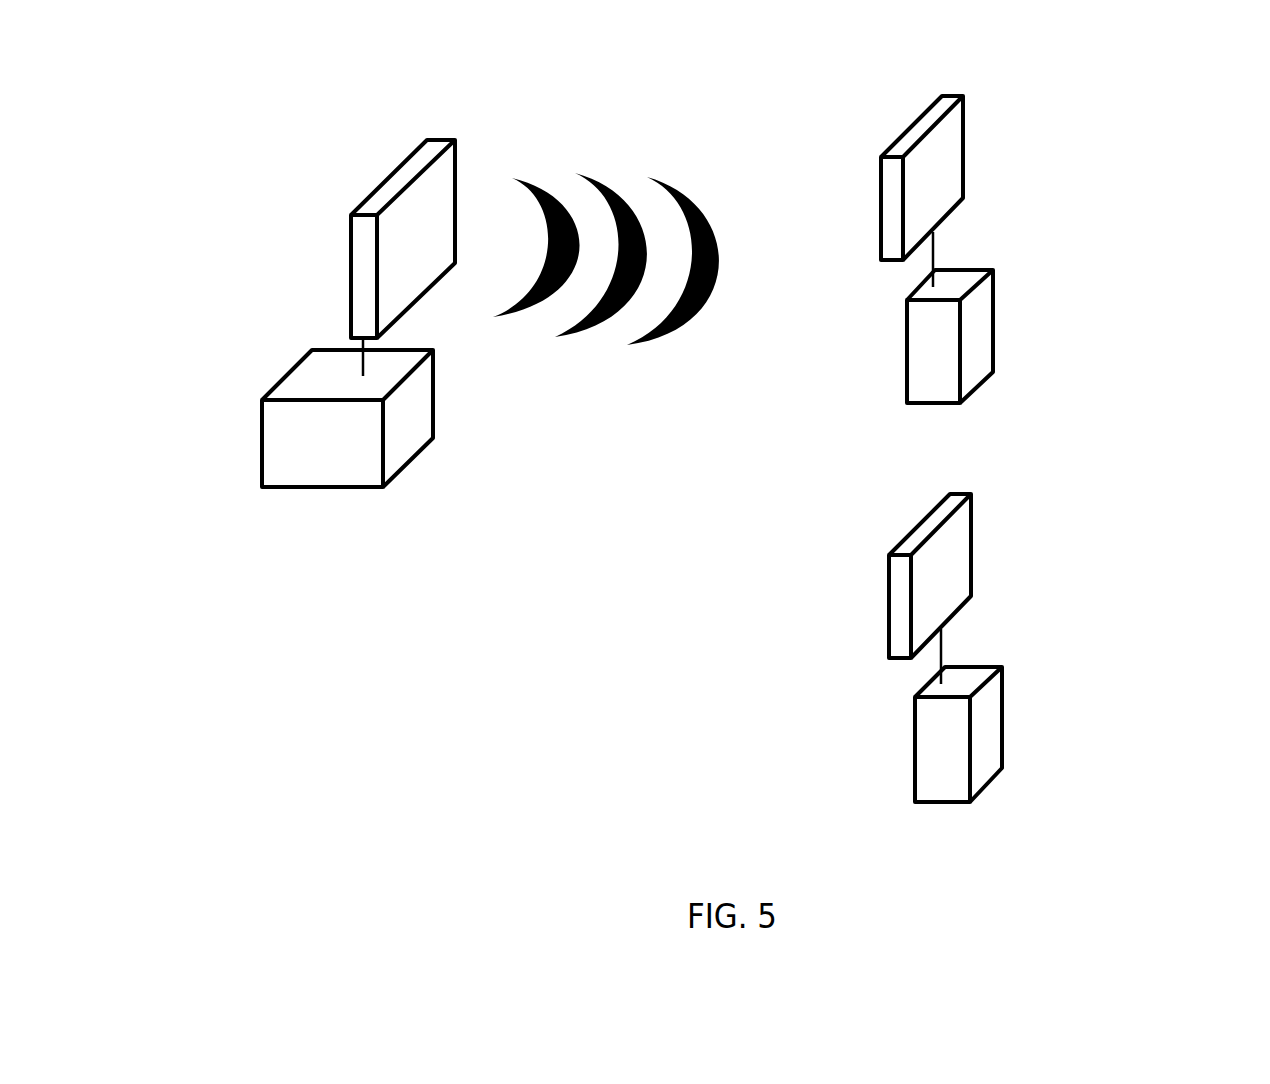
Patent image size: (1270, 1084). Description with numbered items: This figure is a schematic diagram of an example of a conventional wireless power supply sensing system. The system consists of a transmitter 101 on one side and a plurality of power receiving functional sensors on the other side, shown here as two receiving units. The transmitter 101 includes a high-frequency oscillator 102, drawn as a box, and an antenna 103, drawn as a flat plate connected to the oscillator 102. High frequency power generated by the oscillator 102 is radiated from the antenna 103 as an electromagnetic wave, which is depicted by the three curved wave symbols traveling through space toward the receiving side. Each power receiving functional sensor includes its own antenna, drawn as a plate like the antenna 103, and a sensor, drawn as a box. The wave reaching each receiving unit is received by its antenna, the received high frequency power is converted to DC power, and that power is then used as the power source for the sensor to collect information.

The transmitter 101 is at (308, 160).
The high-frequency oscillator 102 is at (330, 349).
The antenna 103 is at (350, 262).